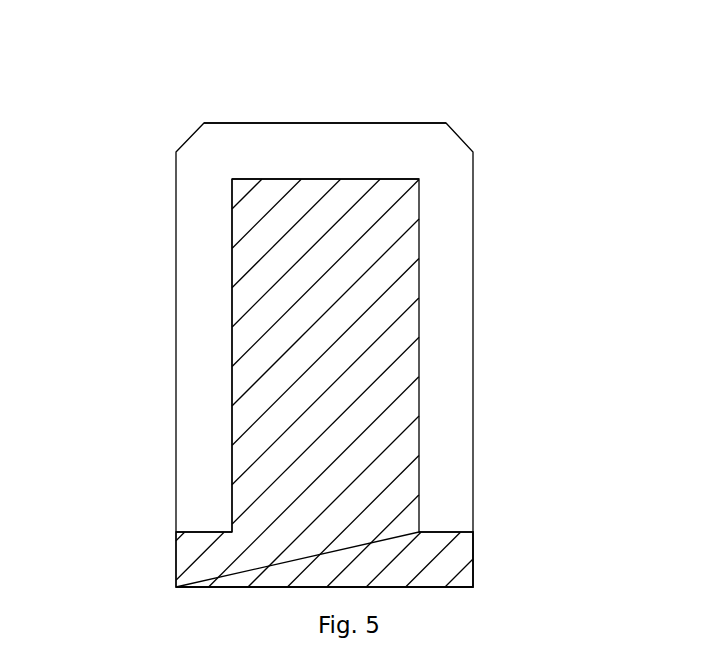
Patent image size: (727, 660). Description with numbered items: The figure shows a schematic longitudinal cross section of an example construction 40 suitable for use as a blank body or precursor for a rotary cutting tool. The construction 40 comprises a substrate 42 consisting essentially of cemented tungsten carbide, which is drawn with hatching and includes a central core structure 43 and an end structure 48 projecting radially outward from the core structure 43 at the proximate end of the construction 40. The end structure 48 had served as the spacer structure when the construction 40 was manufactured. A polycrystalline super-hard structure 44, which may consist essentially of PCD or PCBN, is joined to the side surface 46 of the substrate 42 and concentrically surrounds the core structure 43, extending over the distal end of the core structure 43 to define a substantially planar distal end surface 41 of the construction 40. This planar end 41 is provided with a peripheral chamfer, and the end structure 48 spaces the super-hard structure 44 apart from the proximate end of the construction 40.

The construction 40 is at (545, 101).
The distal end surface 41 is at (326, 123).
The substrate 42 is at (381, 205).
The core structure 43 is at (370, 355).
The polycrystalline super-hard structure 44 is at (196, 248).
The side surface 46 is at (232, 355).
The end structure 48 is at (472, 548).